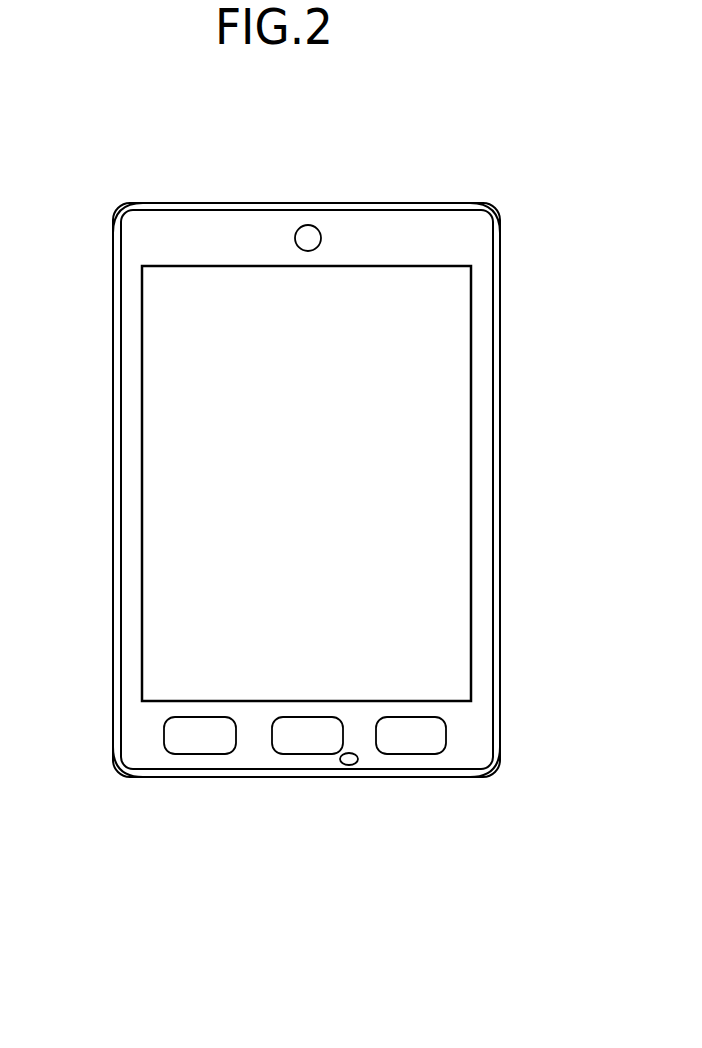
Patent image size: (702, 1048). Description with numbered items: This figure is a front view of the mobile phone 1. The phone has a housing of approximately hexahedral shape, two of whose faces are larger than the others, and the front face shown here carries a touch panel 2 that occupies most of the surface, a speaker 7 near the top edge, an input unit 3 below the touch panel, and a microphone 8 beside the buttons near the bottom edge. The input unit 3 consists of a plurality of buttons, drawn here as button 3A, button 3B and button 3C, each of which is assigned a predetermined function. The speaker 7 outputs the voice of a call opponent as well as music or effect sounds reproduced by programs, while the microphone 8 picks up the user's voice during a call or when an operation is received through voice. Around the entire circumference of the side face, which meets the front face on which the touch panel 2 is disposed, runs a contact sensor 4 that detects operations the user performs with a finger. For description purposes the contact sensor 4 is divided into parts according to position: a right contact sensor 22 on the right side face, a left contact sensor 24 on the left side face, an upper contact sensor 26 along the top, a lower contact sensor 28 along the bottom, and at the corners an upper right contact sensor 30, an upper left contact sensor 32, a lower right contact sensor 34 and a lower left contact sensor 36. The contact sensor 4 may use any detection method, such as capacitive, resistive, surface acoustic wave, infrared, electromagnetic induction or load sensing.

The mobile phone 1 is at (474, 160).
The touch panel 2 is at (400, 432).
The input unit 3 is at (305, 800).
The button 3A is at (200, 754).
The button 3B is at (308, 754).
The button 3C is at (411, 776).
The contact sensor 4 is at (113, 395).
The speaker 7 is at (306, 225).
The microphone 8 is at (349, 765).
The right contact sensor 22 is at (500, 535).
The left contact sensor 24 is at (113, 502).
The upper contact sensor 26 is at (380, 203).
The lower contact sensor 28 is at (442, 778).
The upper right contact sensor 30 is at (490, 208).
The upper left contact sensor 32 is at (126, 206).
The lower right contact sensor 34 is at (490, 768).
The lower left contact sensor 36 is at (113, 765).